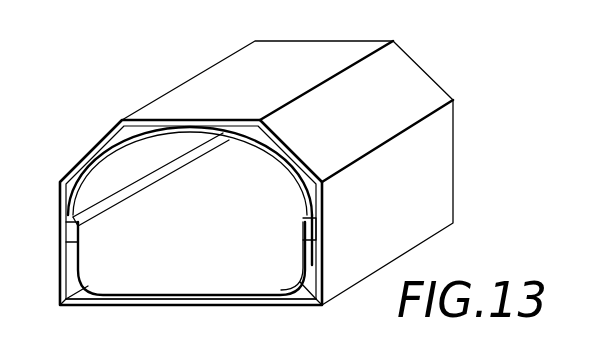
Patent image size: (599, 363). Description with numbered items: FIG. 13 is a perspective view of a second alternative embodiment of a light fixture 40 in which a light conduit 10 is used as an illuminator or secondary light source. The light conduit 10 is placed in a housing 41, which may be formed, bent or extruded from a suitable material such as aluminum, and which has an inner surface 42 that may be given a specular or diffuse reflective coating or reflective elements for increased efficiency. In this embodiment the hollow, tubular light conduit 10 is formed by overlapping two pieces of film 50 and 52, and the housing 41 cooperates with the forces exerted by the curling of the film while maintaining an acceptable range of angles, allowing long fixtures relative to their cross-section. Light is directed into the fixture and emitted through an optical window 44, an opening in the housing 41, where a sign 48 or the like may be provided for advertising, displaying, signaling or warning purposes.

The light conduit 10 is at (100, 138).
The light fixture 40 is at (194, 72).
The housing 41 is at (235, 62).
The inner surface 42 is at (312, 292).
The optical window 44 is at (280, 303).
The sign 48 is at (161, 305).
The piece of film 50 is at (252, 142).
The piece of film 52 is at (221, 290).